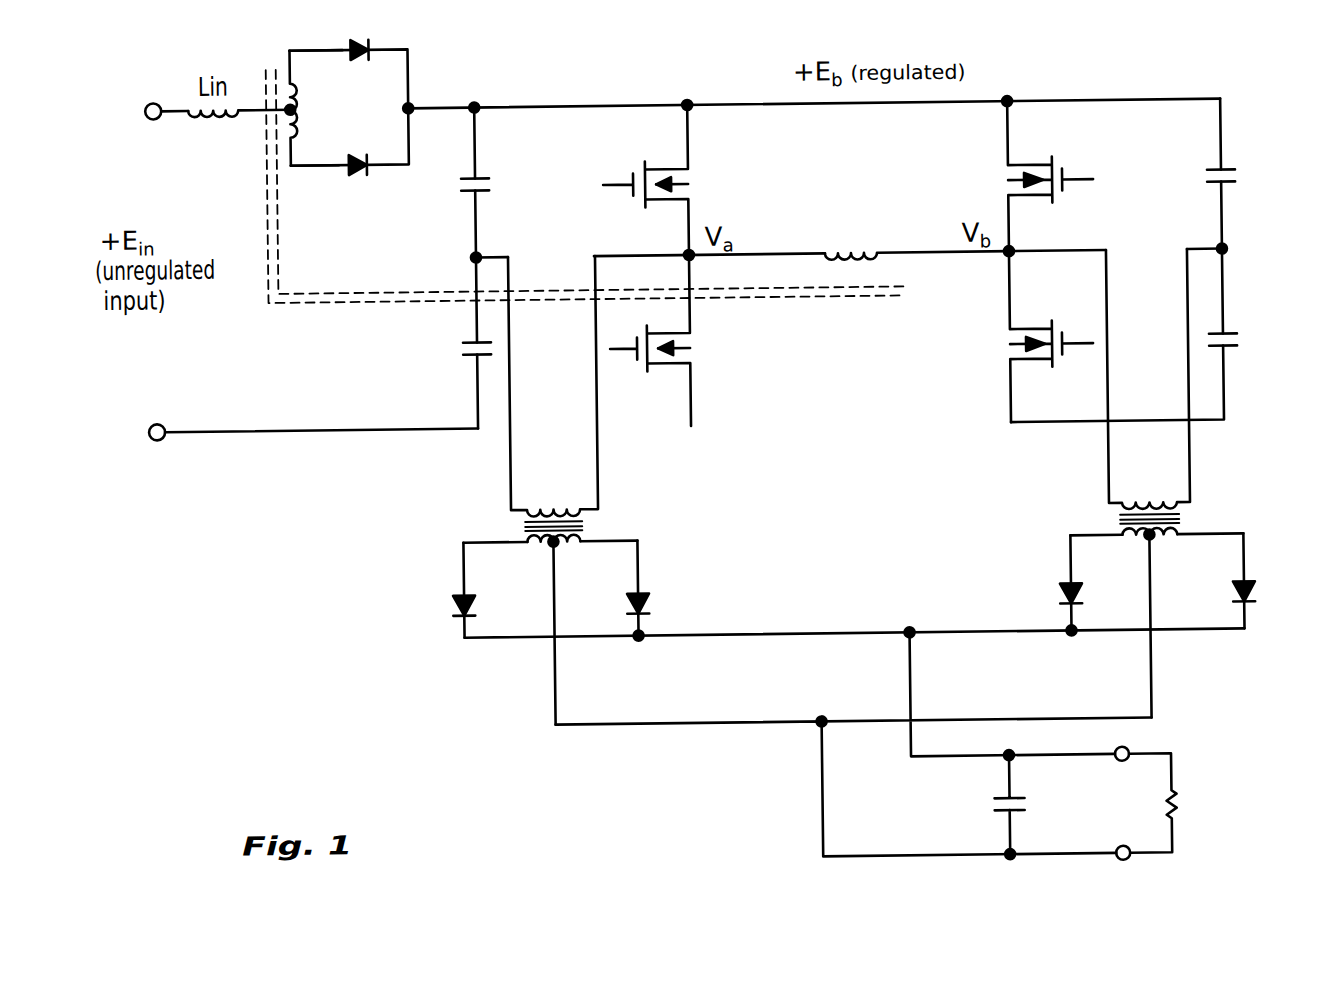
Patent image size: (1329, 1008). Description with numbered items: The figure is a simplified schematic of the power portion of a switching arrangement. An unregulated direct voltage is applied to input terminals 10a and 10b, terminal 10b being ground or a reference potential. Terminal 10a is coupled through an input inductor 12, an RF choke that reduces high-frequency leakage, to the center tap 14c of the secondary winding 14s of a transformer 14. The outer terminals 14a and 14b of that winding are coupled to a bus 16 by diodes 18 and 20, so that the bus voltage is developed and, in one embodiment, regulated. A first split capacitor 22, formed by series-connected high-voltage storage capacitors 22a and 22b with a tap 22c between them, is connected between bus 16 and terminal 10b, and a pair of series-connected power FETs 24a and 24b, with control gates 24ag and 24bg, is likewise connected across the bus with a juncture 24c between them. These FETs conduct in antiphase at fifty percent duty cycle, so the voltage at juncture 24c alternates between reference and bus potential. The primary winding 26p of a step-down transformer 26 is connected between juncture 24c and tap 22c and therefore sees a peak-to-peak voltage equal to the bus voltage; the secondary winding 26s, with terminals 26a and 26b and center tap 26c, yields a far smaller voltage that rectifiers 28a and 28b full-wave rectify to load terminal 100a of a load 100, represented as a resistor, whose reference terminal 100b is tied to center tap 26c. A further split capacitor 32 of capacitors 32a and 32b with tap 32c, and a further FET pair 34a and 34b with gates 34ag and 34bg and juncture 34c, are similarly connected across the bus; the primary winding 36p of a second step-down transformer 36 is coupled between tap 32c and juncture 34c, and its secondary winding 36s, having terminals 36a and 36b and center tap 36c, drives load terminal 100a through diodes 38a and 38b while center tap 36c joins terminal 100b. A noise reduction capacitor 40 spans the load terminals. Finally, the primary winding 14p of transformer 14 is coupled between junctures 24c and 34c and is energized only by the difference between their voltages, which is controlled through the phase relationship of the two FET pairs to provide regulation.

The input terminal 10a is at (148, 108).
The input terminal 10b is at (149, 430).
The input inductor 12 is at (216, 114).
The transformer 14 is at (368, 262).
The outer terminal of secondary winding 14a is at (291, 46).
The outer terminal of secondary winding 14b is at (292, 161).
The center tap 14c is at (290, 107).
The secondary winding 14s is at (302, 108).
The primary winding 14p is at (848, 255).
The bus 16 is at (538, 105).
The unidirectional current conducting device 18 is at (366, 48).
The unidirectional current conducting device 20 is at (359, 163).
The first split capacitor 22 is at (526, 202).
The high-voltage energy storage capacitor 22a is at (461, 181).
The high-voltage energy storage capacitor 22b is at (462, 347).
The tap 22c is at (478, 252).
The power FET 24a is at (644, 162).
The control gate 24ag is at (622, 184).
The power FET 24b is at (646, 342).
The control gate 24bg is at (636, 354).
The juncture 24c is at (686, 253).
The step-down transformer 26 is at (620, 526).
The primary winding 26p is at (552, 510).
The secondary winding 26s is at (522, 532).
The secondary winding terminal 26a is at (532, 544).
The secondary winding terminal 26b is at (574, 544).
The center tap 26c is at (553, 548).
The rectifier 28a is at (452, 606).
The rectifier 28b is at (645, 603).
The split capacitor 32 is at (1175, 200).
The capacitor 32a is at (1237, 186).
The capacitor 32b is at (1237, 349).
The tap 32c is at (1225, 255).
The power FET 34a is at (1054, 162).
The control gate 34ag is at (1090, 186).
The power FET 34b is at (1074, 316).
The gate 34bg is at (1088, 350).
The juncture 34c is at (1007, 257).
The step-down transformer 36 is at (1080, 524).
The primary winding 36p is at (1142, 510).
The secondary winding 36s is at (1173, 532).
The secondary winding terminal 36a is at (1134, 546).
The secondary winding terminal 36b is at (1174, 544).
The center tap 36c is at (1148, 550).
The unidirectional conducting device 38a is at (1057, 601).
The unidirectional conducting device 38b is at (1252, 600).
The noise reduction capacitor 40 is at (1020, 823).
The load 100 is at (1171, 816).
The load terminal 100a is at (1126, 756).
The reference terminal of load 100b is at (1121, 868).